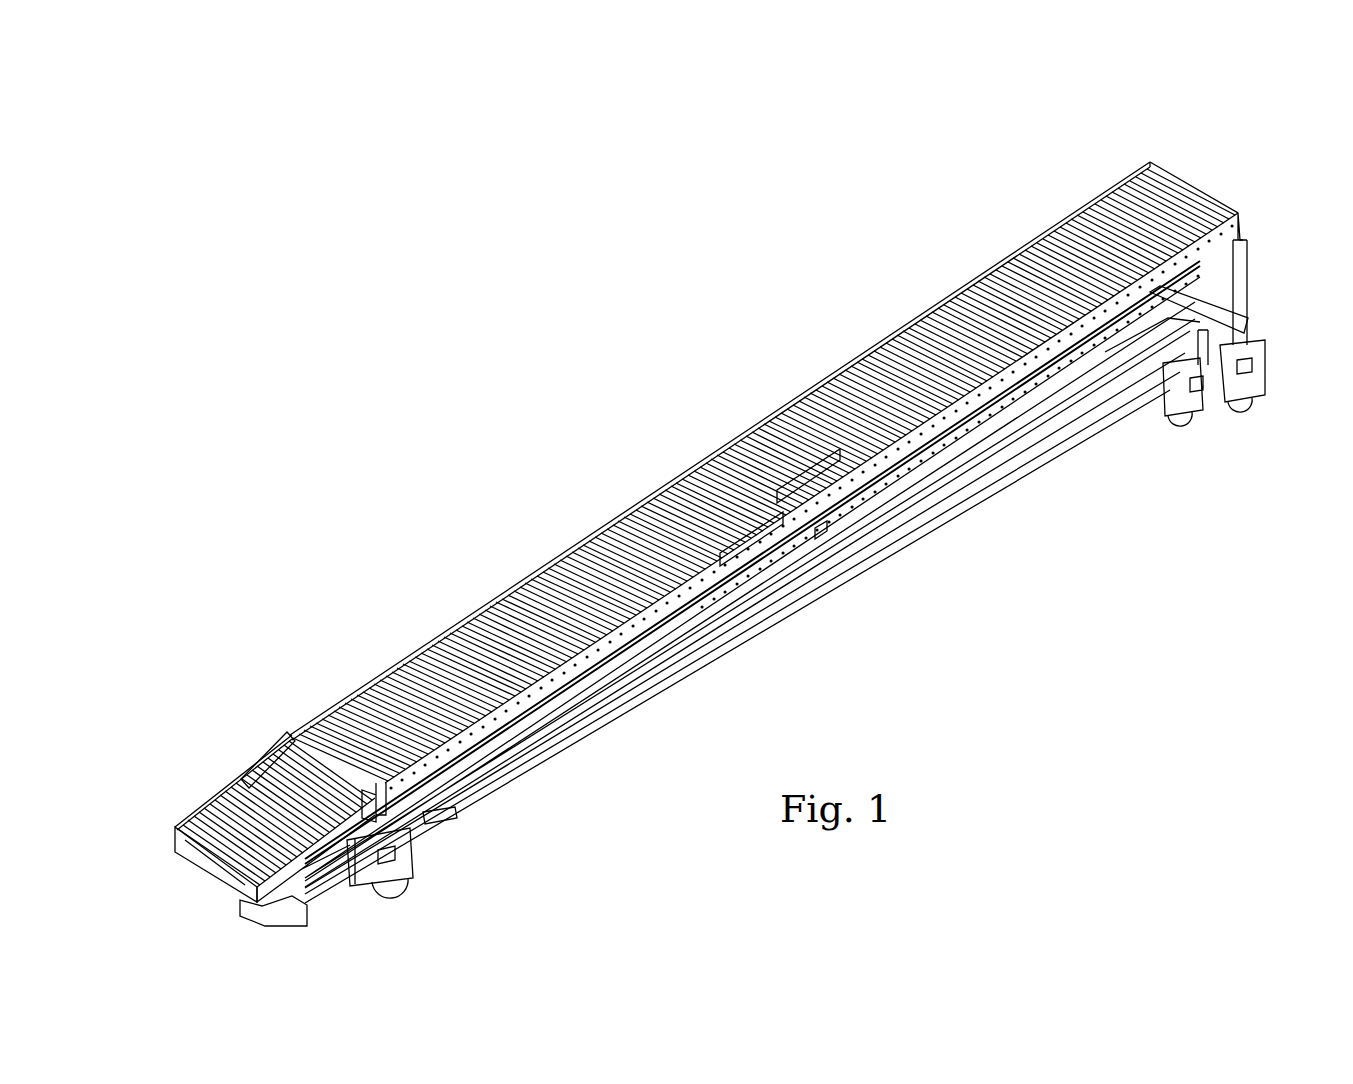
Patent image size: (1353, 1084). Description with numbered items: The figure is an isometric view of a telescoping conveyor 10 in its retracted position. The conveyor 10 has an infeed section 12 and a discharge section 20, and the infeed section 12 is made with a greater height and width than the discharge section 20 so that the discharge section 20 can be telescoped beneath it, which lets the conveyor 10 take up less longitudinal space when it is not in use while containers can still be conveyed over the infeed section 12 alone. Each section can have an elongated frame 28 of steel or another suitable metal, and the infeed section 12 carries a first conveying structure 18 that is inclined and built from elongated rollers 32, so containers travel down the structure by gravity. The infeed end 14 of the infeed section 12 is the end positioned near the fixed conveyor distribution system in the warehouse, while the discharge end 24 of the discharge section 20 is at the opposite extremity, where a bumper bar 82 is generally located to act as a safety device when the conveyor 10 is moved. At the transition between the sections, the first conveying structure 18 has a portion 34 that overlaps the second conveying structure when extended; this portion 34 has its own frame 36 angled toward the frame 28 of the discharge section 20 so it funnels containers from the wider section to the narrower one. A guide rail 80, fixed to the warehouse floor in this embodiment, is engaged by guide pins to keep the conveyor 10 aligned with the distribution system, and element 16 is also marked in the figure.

The telescoping conveyor 10 is at (933, 124).
The infeed section 12 is at (1090, 199).
The infeed end 14 is at (1152, 162).
The rail junction 16 is at (290, 740).
The first conveying structure 18 is at (568, 509).
The discharge section 20 is at (1033, 407).
The discharge end 24 is at (177, 827).
The elongated frame 28 is at (875, 477).
The elongated rollers 32 is at (925, 337).
The portion 34 is at (265, 767).
The frame 36 is at (250, 768).
The guide rail 80 is at (867, 573).
The bumper bar 82 is at (207, 870).